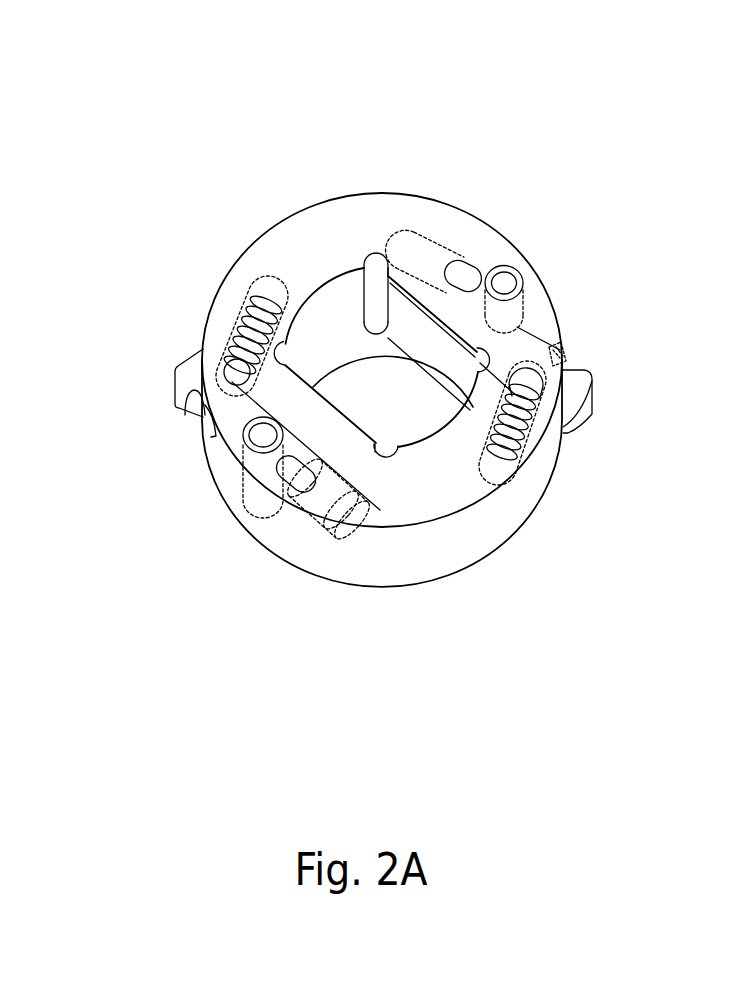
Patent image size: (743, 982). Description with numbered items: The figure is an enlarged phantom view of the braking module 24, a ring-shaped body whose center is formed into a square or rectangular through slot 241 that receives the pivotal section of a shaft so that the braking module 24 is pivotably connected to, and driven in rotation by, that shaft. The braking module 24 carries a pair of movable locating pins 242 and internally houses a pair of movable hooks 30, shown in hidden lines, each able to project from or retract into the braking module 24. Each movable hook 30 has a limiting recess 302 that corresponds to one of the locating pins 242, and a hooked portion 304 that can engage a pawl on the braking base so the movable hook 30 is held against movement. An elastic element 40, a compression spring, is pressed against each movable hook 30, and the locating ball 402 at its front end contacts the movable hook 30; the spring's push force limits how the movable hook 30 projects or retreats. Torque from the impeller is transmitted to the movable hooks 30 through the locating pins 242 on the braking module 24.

The braking module 24 is at (503, 253).
The through slot 241 is at (427, 430).
The movable locating pin 242 is at (502, 284).
The movable hook 30 is at (435, 258).
The limiting recess 302 is at (478, 272).
The hooked portion 304 is at (193, 405).
The elastic element 40 is at (241, 310).
The locating ball 402 is at (237, 371).